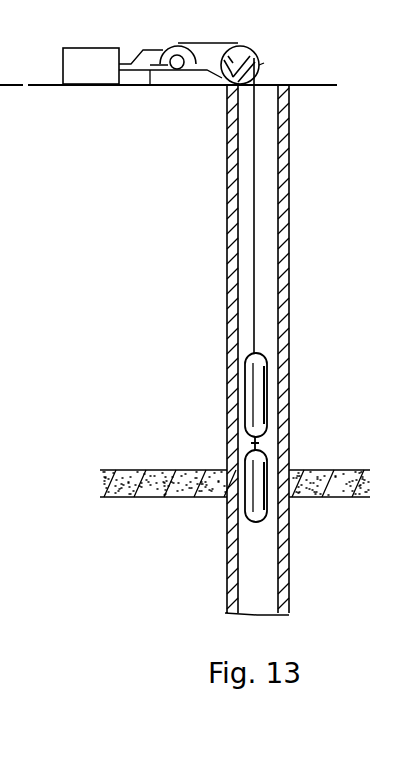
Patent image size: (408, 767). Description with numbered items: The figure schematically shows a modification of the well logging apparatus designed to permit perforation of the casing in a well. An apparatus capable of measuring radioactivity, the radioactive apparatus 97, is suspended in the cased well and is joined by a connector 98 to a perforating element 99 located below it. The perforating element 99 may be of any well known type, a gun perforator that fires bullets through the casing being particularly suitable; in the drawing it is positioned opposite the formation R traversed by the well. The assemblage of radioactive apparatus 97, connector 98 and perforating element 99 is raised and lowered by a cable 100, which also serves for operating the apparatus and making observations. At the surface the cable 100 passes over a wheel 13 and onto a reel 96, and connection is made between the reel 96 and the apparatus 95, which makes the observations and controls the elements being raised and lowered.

The wheel 13 is at (240, 46).
The apparatus 95 is at (91, 66).
The reel 96 is at (182, 45).
The radioactive apparatus 97 is at (268, 388).
The connector 98 is at (239, 443).
The perforating element 99 is at (268, 514).
The cable 100 is at (264, 63).
The formation R is at (223, 485).